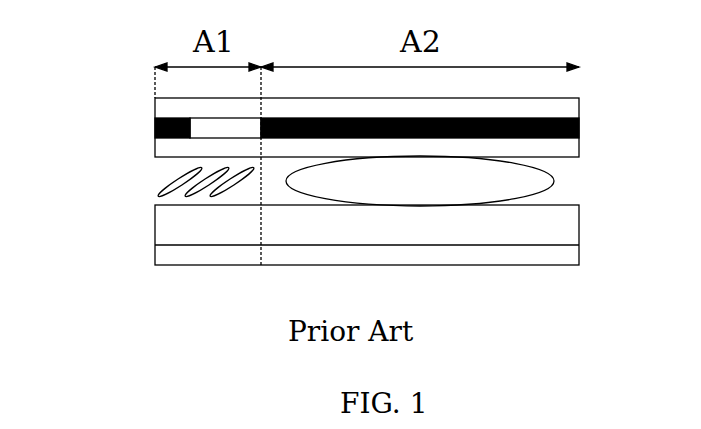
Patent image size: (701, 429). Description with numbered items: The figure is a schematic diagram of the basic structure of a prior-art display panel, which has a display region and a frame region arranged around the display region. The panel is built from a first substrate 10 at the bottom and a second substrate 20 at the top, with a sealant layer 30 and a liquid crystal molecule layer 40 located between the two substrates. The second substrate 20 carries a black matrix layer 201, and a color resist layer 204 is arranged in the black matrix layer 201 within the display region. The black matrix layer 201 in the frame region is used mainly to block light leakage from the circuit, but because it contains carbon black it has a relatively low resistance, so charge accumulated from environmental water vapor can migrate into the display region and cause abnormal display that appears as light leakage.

The first substrate 10 is at (142, 205).
The second substrate 20 is at (142, 98).
The black matrix layer 201 is at (579, 130).
The color resist layer 204 is at (205, 117).
The sealant layer 30 is at (554, 177).
The liquid crystal molecule layer 40 is at (202, 192).